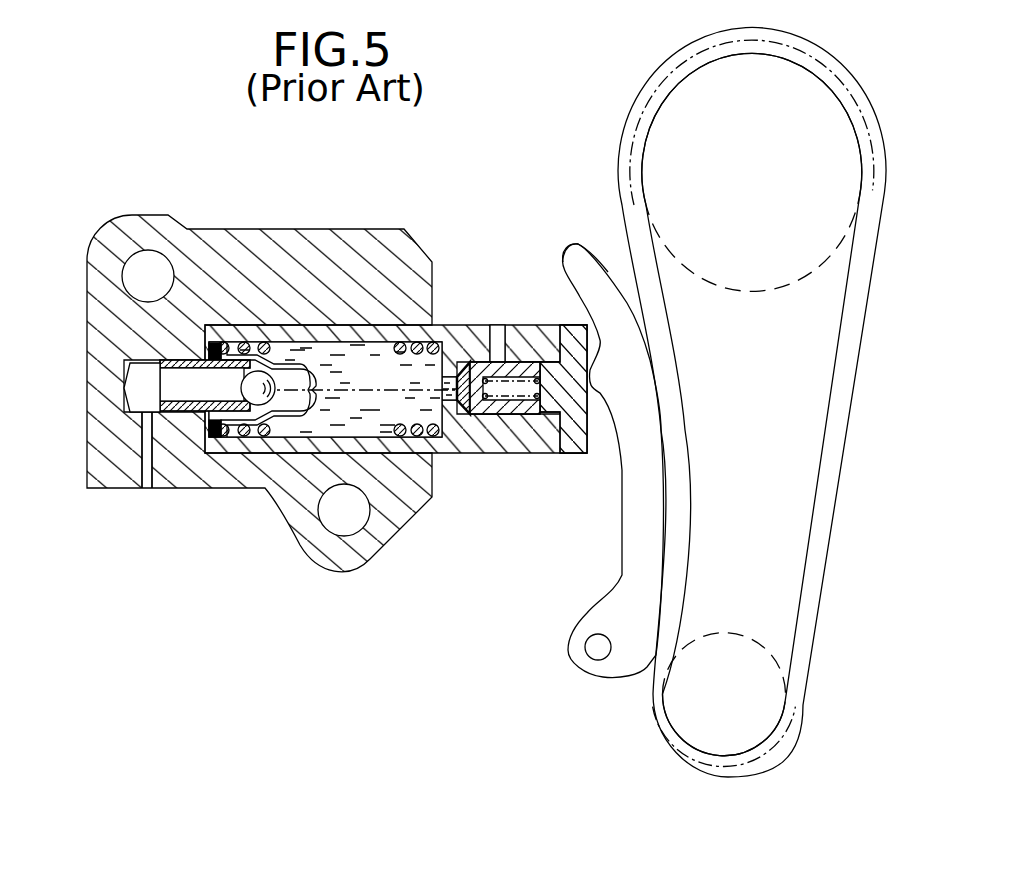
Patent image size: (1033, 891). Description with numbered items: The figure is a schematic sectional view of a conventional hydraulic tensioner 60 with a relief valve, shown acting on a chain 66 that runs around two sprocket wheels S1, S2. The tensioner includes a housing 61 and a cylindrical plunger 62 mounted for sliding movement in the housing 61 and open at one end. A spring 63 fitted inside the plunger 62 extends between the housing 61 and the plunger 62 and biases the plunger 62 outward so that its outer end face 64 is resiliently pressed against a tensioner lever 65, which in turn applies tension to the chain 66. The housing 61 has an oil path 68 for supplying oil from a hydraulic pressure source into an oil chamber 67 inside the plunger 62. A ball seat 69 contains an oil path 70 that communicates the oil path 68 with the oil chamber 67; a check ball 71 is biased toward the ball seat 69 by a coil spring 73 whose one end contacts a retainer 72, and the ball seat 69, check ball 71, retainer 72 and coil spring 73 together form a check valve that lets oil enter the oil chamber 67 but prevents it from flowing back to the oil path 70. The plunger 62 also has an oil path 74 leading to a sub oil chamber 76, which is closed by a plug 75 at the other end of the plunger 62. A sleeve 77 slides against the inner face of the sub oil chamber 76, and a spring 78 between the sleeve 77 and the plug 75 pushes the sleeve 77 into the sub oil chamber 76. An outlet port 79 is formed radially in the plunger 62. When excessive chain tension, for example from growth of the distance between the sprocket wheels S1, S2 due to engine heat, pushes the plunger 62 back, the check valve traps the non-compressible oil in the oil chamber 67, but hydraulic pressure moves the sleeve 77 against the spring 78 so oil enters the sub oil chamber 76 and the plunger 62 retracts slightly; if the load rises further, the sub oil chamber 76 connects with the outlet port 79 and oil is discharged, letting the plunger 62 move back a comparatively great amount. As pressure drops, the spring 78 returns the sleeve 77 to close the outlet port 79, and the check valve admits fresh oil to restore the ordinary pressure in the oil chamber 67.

The hydraulic tensioner 60 is at (337, 373).
The housing 61 is at (412, 232).
The plunger 62 is at (277, 452).
The spring 63 is at (403, 432).
The outer end face 64 is at (608, 430).
The tensioner lever 65 is at (574, 262).
The chain 66 is at (836, 512).
The oil chamber 67 is at (398, 400).
The oil path 68 is at (145, 489).
The ball seat 69 is at (200, 396).
The oil path 70 is at (183, 388).
The check ball 71 is at (188, 412).
The retainer 72 is at (272, 406).
The coil spring 73 is at (275, 433).
The oil path 74 is at (455, 416).
The plug 75 is at (572, 455).
The sub oil chamber 76 is at (455, 372).
The sleeve 77 is at (488, 416).
The spring 78 is at (525, 416).
The outlet port 79 is at (500, 336).
The sprocket wheel S1 is at (752, 272).
The sprocket wheel S2 is at (738, 648).